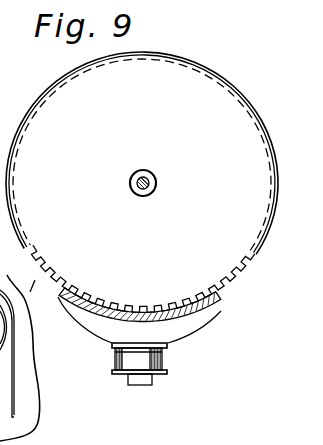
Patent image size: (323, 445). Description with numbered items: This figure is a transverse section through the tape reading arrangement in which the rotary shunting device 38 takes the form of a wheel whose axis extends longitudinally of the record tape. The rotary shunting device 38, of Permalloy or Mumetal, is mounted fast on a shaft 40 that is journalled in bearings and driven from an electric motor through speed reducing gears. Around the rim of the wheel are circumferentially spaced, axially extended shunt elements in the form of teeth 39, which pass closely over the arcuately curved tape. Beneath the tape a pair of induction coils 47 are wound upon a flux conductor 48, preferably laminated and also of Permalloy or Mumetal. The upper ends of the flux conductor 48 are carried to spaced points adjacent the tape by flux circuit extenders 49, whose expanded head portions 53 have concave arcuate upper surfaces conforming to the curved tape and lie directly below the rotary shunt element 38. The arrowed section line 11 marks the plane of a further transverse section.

The rotary shunting device 38 is at (215, 111).
The shaft 40 is at (156, 183).
The teeth 39 is at (228, 284).
The expanded head portions 53 is at (223, 311).
The flux circuit extenders 49 is at (82, 320).
The coils 47 is at (165, 364).
The flux conductor 48 is at (150, 382).
The section line 11- 11 is at (172, 272).